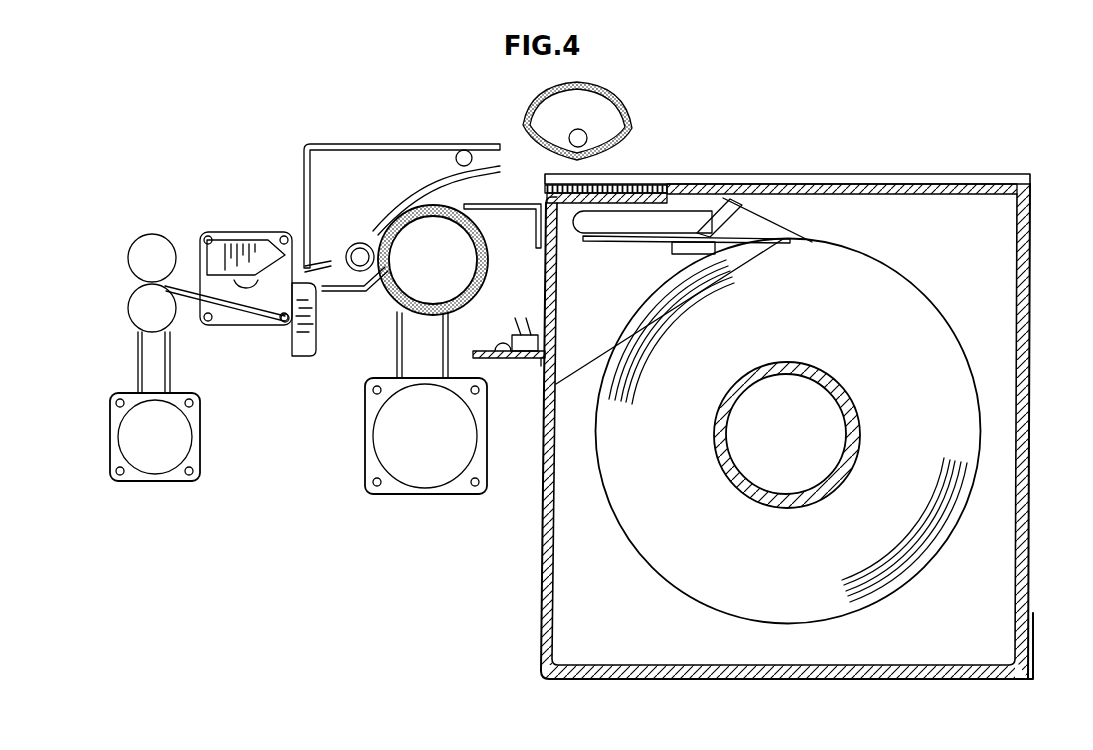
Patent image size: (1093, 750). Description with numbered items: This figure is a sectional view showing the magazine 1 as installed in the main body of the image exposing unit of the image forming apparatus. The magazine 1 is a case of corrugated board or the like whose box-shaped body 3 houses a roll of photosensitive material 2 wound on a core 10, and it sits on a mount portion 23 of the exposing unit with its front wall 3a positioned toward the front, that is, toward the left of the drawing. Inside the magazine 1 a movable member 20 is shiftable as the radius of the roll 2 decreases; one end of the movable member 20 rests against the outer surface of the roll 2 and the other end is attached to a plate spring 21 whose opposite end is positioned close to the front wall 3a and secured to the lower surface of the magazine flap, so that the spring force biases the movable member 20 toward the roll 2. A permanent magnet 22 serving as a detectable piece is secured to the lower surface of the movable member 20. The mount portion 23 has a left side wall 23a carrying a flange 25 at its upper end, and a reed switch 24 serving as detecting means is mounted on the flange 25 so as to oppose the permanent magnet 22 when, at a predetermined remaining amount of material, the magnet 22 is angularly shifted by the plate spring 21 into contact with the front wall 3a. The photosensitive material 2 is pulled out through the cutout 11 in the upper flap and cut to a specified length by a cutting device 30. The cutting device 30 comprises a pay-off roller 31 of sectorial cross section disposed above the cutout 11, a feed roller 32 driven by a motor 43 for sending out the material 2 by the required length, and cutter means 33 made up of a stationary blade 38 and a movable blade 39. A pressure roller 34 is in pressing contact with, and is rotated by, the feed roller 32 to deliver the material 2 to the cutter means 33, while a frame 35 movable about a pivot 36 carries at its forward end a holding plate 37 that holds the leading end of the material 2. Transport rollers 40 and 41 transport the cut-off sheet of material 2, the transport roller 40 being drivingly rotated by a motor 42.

The case 1 is at (1038, 265).
The roll of photosensitive material 2 is at (878, 296).
The box-shaped body 3 is at (1022, 421).
The front wall 3a is at (555, 586).
The core 10 is at (805, 503).
The cutout 11 is at (645, 184).
The movable member 20 is at (612, 242).
The plate spring 21 is at (580, 223).
The permanent magnet 22 is at (672, 250).
The mount portion 23 is at (700, 680).
The left side wall 23a is at (543, 540).
The reed switch 24 is at (498, 350).
The flange 25 is at (510, 360).
The cutting device 30 is at (266, 112).
The pay-off roller 31 is at (620, 103).
The feed roller 32 is at (396, 296).
The cutter means 33 is at (228, 218).
The pressure roller 34 is at (358, 263).
The frame 35 is at (340, 148).
The pivot 36 is at (462, 150).
The holding plate 37 is at (313, 260).
The stationary blade 38 is at (298, 352).
The movable blade 39 is at (247, 240).
The transport roller 40 is at (130, 252).
The transport roller 41 is at (130, 312).
The motor 42 is at (178, 483).
The motor 43 is at (392, 496).